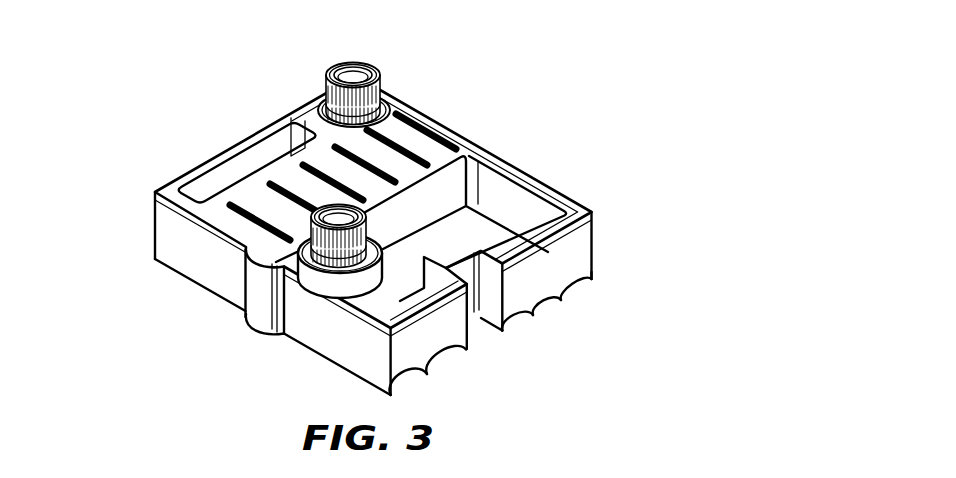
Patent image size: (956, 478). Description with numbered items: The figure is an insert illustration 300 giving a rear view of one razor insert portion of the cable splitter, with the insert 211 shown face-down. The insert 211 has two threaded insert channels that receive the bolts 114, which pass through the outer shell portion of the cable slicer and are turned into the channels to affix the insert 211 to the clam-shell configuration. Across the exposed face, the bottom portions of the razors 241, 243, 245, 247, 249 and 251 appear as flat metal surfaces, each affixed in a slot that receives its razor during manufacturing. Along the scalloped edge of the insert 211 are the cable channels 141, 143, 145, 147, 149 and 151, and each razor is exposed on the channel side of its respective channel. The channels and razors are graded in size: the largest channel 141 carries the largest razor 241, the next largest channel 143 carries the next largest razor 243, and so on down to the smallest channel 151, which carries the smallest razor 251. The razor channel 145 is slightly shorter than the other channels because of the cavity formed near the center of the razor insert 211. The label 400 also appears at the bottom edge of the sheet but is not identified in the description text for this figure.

The insert illustration 300 is at (89, 59).
The housing assembly (next figure) 400 is at (58, 471).
The bolts 114 is at (326, 74).
The insert 211 is at (577, 243).
The razor 241 is at (185, 171).
The razor 243 is at (272, 203).
The razor 245 is at (276, 165).
The razor 247 is at (456, 148).
The razor 249 is at (428, 140).
The razor 251 is at (408, 128).
The channel 141 is at (410, 370).
The channel 143 is at (448, 352).
The razor channel 145 is at (473, 326).
The channel 147 is at (518, 312).
The channel 149 is at (550, 298).
The channel 151 is at (578, 285).